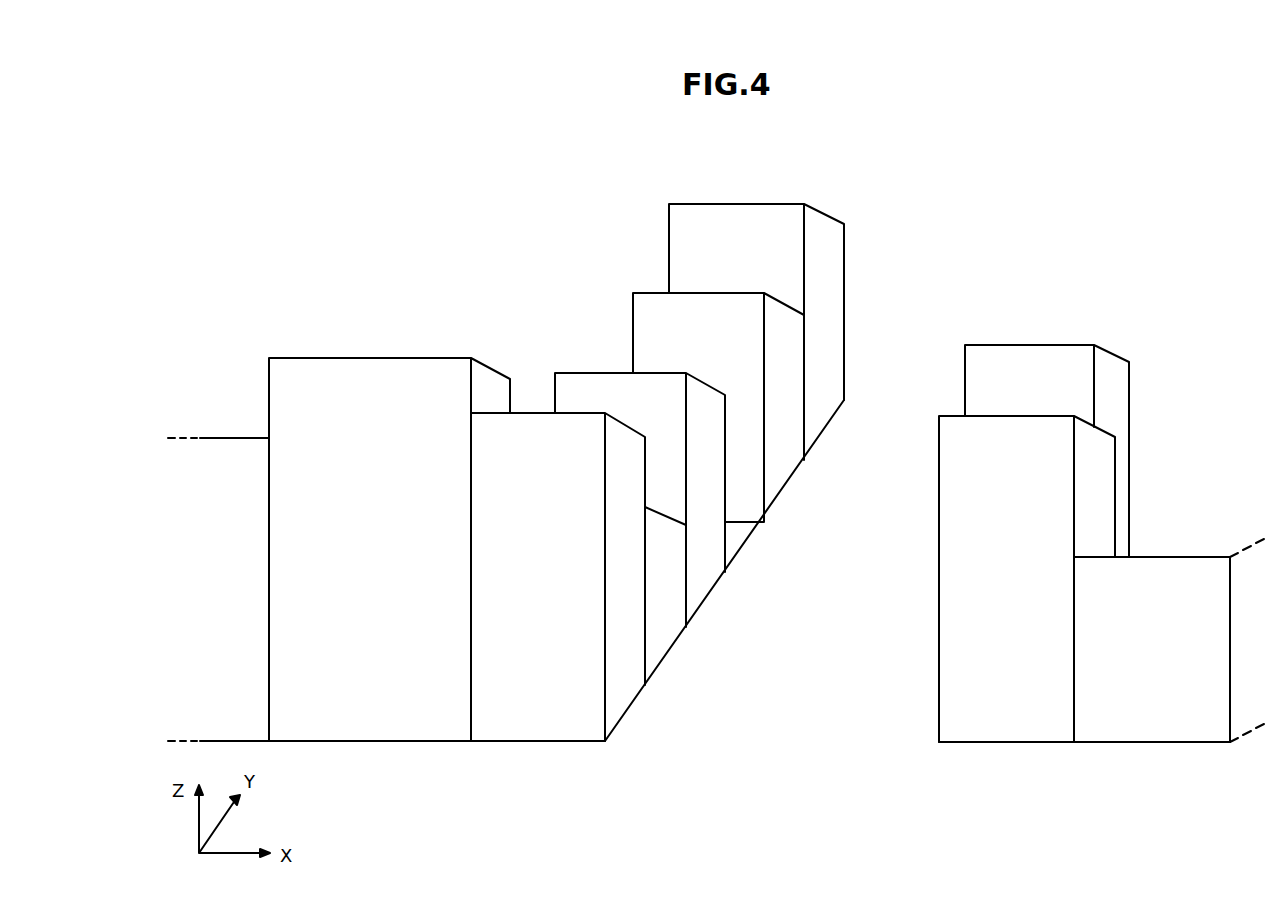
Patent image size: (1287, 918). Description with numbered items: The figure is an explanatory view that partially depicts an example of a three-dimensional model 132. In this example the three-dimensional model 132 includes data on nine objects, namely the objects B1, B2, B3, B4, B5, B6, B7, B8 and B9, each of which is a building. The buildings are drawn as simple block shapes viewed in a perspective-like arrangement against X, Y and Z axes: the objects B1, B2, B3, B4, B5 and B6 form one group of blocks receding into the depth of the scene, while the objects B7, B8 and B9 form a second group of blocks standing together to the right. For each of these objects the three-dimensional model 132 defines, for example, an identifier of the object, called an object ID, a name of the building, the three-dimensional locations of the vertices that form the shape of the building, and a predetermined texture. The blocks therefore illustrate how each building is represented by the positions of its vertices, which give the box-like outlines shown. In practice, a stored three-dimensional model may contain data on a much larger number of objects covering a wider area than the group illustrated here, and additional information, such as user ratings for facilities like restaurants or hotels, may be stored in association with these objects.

The three-dimensional model 132 is at (1013, 140).
The object B1 is at (326, 358).
The object B2 is at (532, 418).
The object B3 is at (660, 618).
The object B4 is at (710, 553).
The object B5 is at (783, 442).
The object B6 is at (827, 235).
The object B7 is at (995, 711).
The object B8 is at (1108, 373).
The object B9 is at (1145, 711).